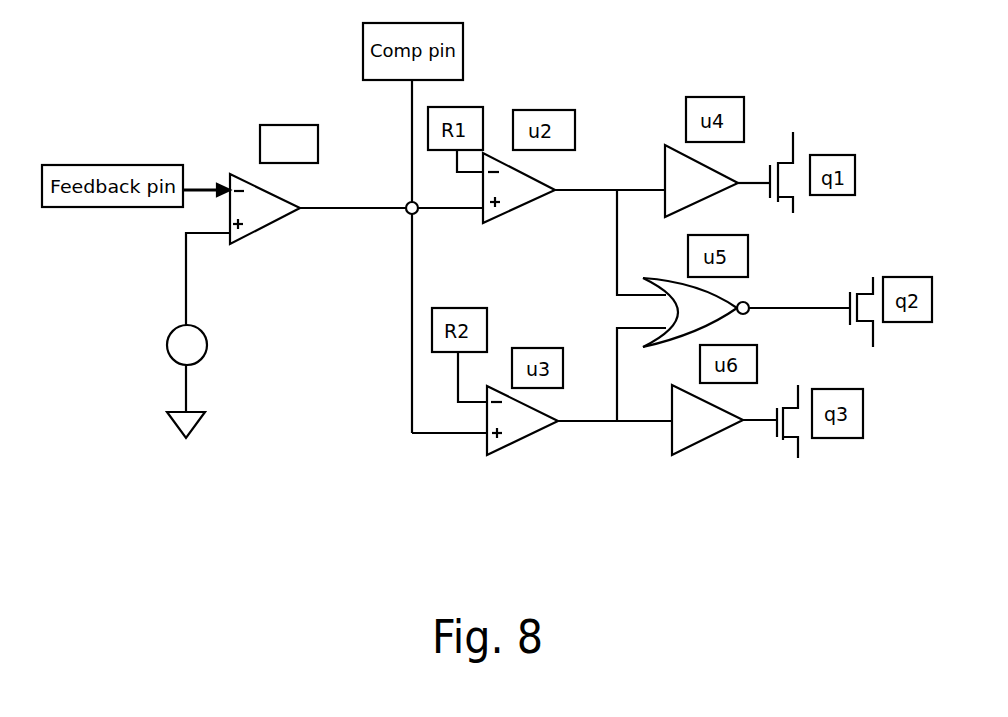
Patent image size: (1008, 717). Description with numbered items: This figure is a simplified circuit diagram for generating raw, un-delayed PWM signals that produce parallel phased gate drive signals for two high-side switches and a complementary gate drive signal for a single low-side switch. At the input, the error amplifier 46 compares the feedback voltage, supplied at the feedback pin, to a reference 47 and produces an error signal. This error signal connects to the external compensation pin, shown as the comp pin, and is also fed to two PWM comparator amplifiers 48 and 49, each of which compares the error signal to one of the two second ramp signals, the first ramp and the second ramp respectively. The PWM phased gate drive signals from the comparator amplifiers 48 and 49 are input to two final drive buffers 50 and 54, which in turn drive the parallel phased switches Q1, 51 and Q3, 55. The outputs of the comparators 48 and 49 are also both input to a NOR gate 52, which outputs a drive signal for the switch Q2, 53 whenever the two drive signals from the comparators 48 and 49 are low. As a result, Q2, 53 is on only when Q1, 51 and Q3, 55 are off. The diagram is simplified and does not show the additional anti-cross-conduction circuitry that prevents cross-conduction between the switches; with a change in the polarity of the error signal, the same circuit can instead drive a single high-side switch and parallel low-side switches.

The error amplifier 46 is at (230, 176).
The reference 47 is at (196, 328).
The PWM comparator amplifier 48 is at (493, 221).
The PWM comparator amplifier 49 is at (494, 455).
The final drive buffer 50 is at (664, 163).
The parallel phased switch Q1 51 is at (786, 160).
The NOR gate 52 is at (678, 287).
The switch Q2 53 is at (861, 290).
The final drive buffer 54 is at (675, 455).
The parallel phased switch Q3 55 is at (787, 441).